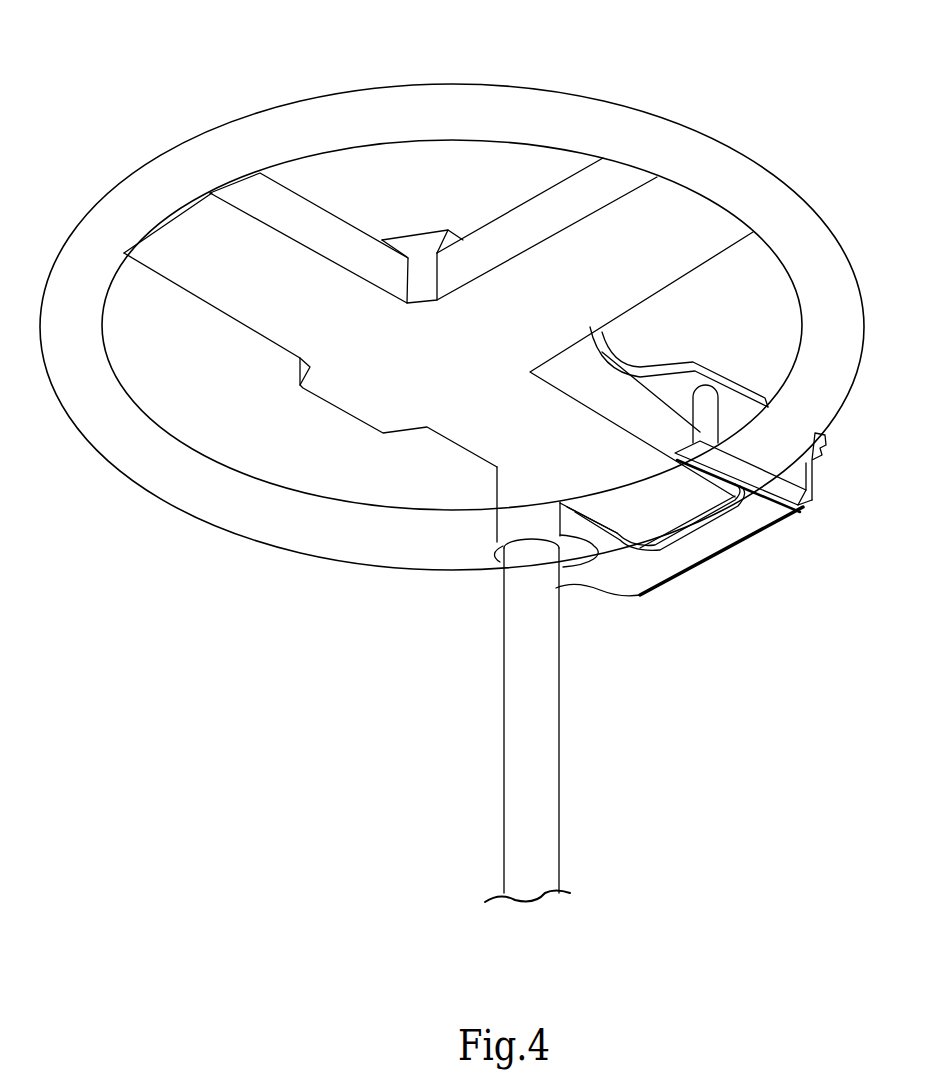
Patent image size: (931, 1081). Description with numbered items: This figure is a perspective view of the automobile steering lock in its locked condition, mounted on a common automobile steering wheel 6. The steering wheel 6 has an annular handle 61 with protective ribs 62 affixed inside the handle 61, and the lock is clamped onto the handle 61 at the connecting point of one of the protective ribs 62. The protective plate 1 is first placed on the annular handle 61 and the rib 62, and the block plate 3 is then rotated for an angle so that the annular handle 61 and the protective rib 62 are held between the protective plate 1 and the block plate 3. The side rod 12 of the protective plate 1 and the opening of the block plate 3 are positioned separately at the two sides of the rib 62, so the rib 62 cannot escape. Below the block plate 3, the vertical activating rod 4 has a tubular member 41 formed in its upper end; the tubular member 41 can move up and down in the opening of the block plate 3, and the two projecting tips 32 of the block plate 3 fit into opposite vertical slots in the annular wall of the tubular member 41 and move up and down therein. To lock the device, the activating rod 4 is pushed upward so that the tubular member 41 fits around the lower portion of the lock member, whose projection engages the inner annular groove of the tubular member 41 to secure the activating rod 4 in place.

The automobile steering wheel 6 is at (452, 290).
The annular handle 61 is at (575, 107).
The protective rib 62 is at (202, 288).
The protective plate 1 is at (697, 365).
The side rod 12 is at (737, 382).
The block plate 3 is at (730, 557).
The projecting tips 32 is at (578, 550).
The activating rod 4 is at (503, 716).
The tubular member 41 is at (497, 495).